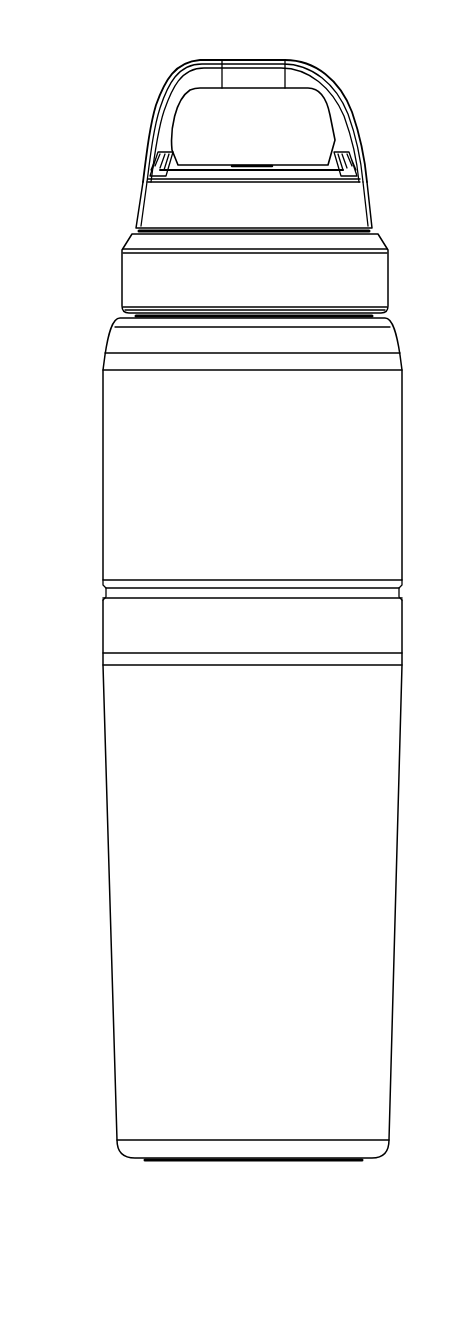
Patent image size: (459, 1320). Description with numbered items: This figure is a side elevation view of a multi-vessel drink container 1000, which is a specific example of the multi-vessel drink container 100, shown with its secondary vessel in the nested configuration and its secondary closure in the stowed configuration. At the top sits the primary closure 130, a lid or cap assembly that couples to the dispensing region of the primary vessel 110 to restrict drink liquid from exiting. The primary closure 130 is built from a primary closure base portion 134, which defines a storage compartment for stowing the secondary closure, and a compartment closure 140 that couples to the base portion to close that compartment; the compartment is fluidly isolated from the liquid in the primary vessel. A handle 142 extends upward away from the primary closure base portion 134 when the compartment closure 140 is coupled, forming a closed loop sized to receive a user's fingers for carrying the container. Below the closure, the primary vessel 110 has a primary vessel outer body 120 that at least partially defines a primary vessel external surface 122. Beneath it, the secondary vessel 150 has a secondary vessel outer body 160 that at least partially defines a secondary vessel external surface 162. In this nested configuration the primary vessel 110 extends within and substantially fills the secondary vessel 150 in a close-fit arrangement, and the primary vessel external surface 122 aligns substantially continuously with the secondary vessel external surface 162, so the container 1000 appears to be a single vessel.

The multi-vessel drink container 100 is at (137, 50).
The multi-vessel drink container 1000 is at (130, 82).
The primary closure 130 is at (97, 112).
The handle 142 is at (340, 88).
The compartment closure 140 is at (372, 208).
The primary closure base portion 134 is at (122, 268).
The primary vessel 110 is at (85, 419).
The primary vessel outer body 120 is at (100, 497).
The primary vessel external surface 122 is at (100, 510).
The secondary vessel 150 is at (88, 722).
The secondary vessel outer body 160 is at (107, 797).
The secondary vessel external surface 162 is at (107, 810).